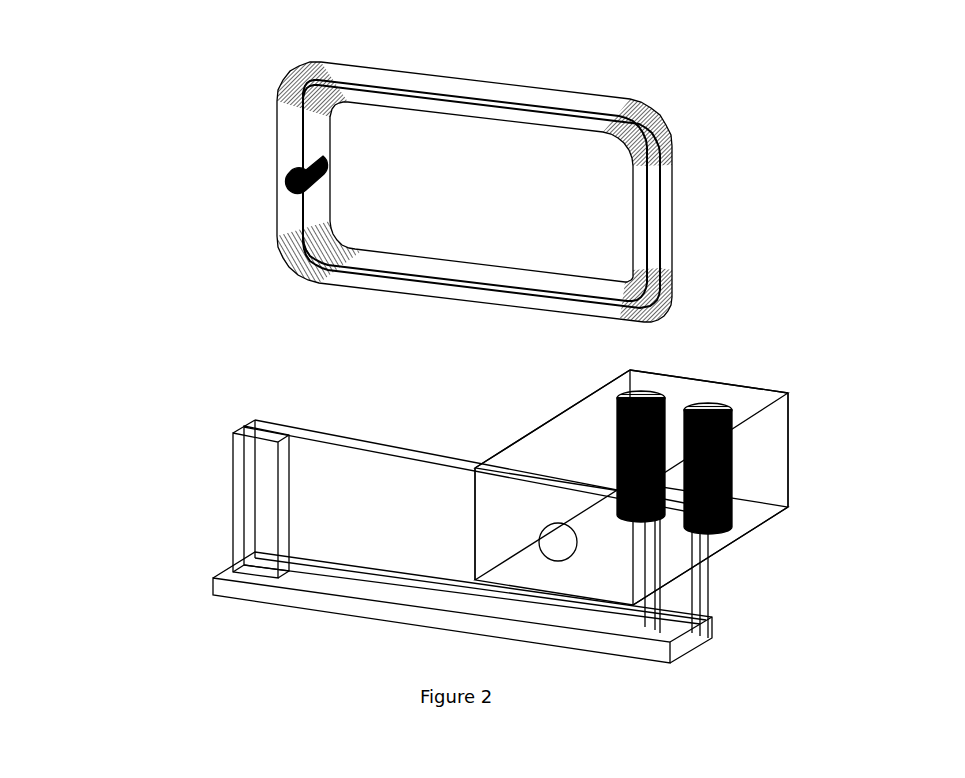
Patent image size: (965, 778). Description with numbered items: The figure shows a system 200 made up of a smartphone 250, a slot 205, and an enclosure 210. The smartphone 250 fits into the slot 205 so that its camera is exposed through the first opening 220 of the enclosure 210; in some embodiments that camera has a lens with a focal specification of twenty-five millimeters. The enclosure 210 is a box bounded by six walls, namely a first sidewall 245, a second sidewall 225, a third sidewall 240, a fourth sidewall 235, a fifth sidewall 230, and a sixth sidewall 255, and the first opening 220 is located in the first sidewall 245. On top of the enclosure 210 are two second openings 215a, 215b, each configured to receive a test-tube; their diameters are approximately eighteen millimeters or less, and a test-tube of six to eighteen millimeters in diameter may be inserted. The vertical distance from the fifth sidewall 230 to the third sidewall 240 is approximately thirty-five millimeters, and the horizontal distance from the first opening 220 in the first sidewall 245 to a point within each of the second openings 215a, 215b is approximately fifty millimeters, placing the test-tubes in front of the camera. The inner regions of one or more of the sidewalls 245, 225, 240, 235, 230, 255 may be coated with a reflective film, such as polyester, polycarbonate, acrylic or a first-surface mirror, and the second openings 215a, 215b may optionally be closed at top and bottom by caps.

The system 200 is at (704, 103).
The slot 205 is at (225, 578).
The enclosure 210 is at (622, 360).
The second opening 215a is at (735, 450).
The second opening 215b is at (620, 405).
The first opening 220 is at (546, 559).
The second sidewall 225 is at (530, 438).
The fifth sidewall 230 is at (690, 385).
The fourth sidewall 235 is at (773, 483).
The third sidewall 240 is at (741, 534).
The first sidewall 245 is at (483, 550).
The smartphone 250 is at (340, 122).
The sixth sidewall 255 is at (782, 419).